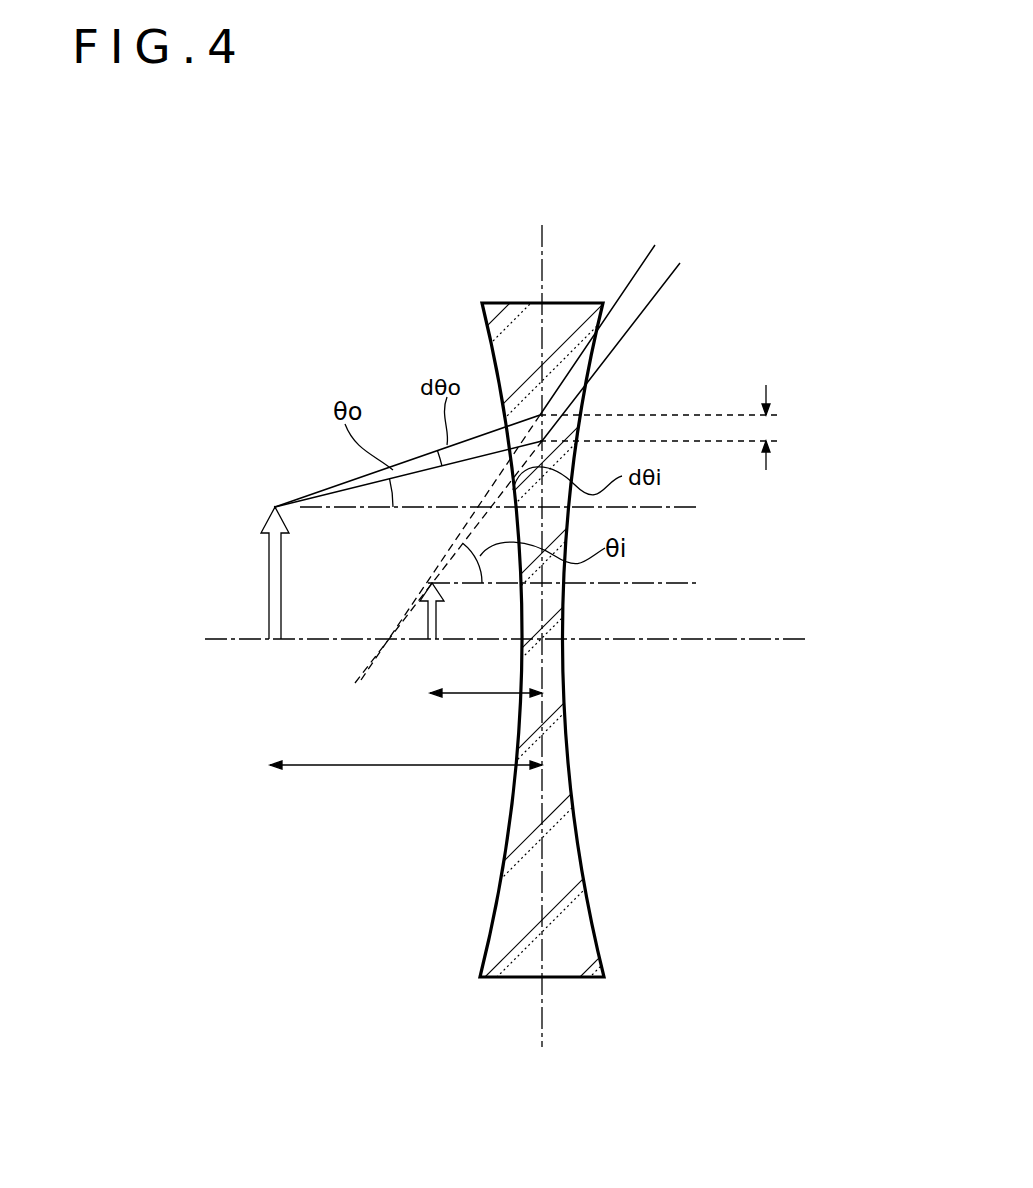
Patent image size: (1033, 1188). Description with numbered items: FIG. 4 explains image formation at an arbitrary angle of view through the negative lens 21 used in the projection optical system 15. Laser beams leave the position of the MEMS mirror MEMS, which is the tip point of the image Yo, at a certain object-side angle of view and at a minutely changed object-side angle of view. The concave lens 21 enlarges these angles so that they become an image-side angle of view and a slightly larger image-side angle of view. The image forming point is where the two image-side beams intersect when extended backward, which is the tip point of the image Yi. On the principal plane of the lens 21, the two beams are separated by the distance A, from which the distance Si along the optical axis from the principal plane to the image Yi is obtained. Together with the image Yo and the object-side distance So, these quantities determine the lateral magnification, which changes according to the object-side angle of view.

The projection optical system 15 is at (542, 594).
The negative lens 21 is at (482, 328).
The distance on principal plane A is at (666, 429).
The MEMS mirror MEMS is at (271, 489).
The image Yo is at (260, 573).
The image Yi is at (446, 611).
The distance Si is at (486, 709).
The distance So is at (406, 783).